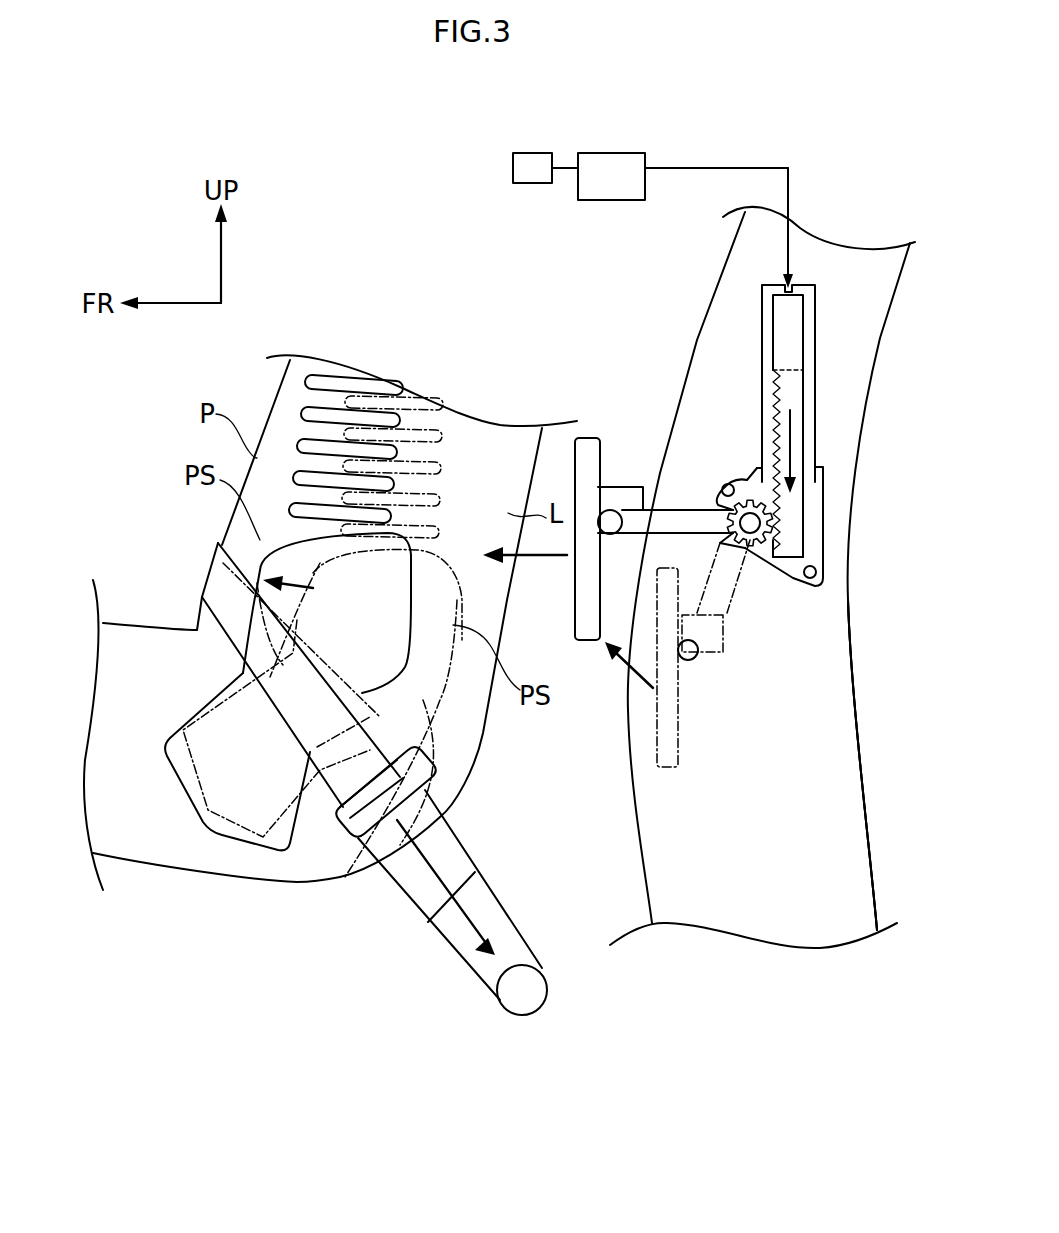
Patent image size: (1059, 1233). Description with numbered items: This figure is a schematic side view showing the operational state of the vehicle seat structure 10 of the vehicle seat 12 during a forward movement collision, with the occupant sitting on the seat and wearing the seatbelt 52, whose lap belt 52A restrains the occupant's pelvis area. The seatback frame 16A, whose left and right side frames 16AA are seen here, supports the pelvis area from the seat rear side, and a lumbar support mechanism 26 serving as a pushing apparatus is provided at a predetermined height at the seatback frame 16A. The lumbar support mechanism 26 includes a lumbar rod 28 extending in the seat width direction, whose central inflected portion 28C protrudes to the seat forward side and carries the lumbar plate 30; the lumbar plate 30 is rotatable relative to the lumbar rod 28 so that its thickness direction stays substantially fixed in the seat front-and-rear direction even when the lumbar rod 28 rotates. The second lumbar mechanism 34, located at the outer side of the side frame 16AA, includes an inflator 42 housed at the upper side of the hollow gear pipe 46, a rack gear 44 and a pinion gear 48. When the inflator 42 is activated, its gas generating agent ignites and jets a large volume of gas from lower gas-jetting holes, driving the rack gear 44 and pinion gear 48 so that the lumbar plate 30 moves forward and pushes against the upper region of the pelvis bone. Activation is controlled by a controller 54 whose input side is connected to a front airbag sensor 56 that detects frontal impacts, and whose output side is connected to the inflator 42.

The vehicle seat structure 10 is at (543, 325).
The vehicle seat 12 is at (618, 900).
The seatback frame 16A is at (898, 765).
The side frame 16AA is at (836, 733).
The lumbar support mechanism 26 is at (657, 381).
The lumbar rod 28 is at (681, 518).
The inflected portion 28C is at (604, 532).
The lumbar plate 30 is at (590, 437).
The second lumbar mechanism 34 is at (830, 490).
The inflator 42 is at (793, 322).
The rack gear 44 is at (793, 524).
The gear pipe 46 is at (773, 405).
The pinion gear 48 is at (729, 485).
The seatbelt 52 is at (332, 763).
The lap belt 52A is at (205, 580).
The controller 54 is at (605, 152).
The front airbag sensor 56 is at (532, 152).